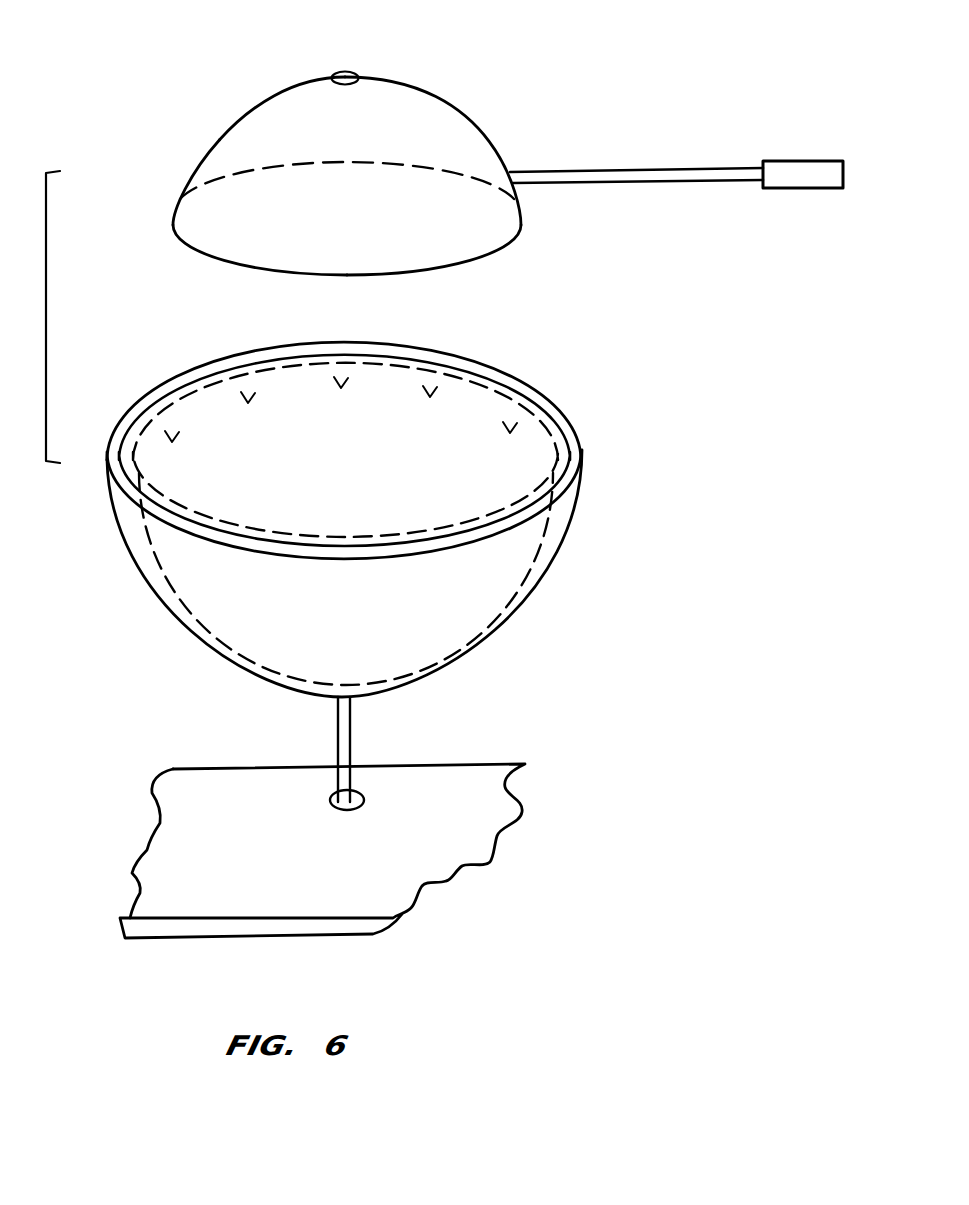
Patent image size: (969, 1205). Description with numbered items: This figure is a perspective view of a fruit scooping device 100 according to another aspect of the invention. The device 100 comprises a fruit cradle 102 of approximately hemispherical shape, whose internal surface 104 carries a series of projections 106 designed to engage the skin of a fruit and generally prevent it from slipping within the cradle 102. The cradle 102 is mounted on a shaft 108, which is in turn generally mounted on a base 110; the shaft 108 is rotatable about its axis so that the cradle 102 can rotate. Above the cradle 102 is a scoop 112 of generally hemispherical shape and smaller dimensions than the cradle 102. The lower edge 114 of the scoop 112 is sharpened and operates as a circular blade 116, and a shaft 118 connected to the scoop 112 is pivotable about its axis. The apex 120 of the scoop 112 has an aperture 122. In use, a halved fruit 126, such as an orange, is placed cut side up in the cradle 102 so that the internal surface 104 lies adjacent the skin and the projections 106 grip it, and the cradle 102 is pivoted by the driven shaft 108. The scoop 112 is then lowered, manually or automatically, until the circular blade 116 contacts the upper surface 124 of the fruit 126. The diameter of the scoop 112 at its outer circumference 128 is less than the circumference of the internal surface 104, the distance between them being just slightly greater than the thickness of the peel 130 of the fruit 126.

The fruit scooping device 100 is at (190, 110).
The fruit cradle 102 is at (150, 585).
The internal surface 104 is at (137, 438).
The projections 106 is at (520, 420).
The shaft 108 is at (348, 740).
The base 110 is at (498, 793).
The scoop 112 is at (452, 103).
The lower edge 114 is at (222, 247).
The circular blade 116 is at (485, 253).
The shaft 118 is at (590, 171).
The apex 120 is at (292, 100).
The aperture 122 is at (346, 72).
The upper surface 124 is at (467, 408).
The fruit 126 is at (475, 593).
The outer circumference 128 is at (187, 180).
The peel 130 is at (522, 487).